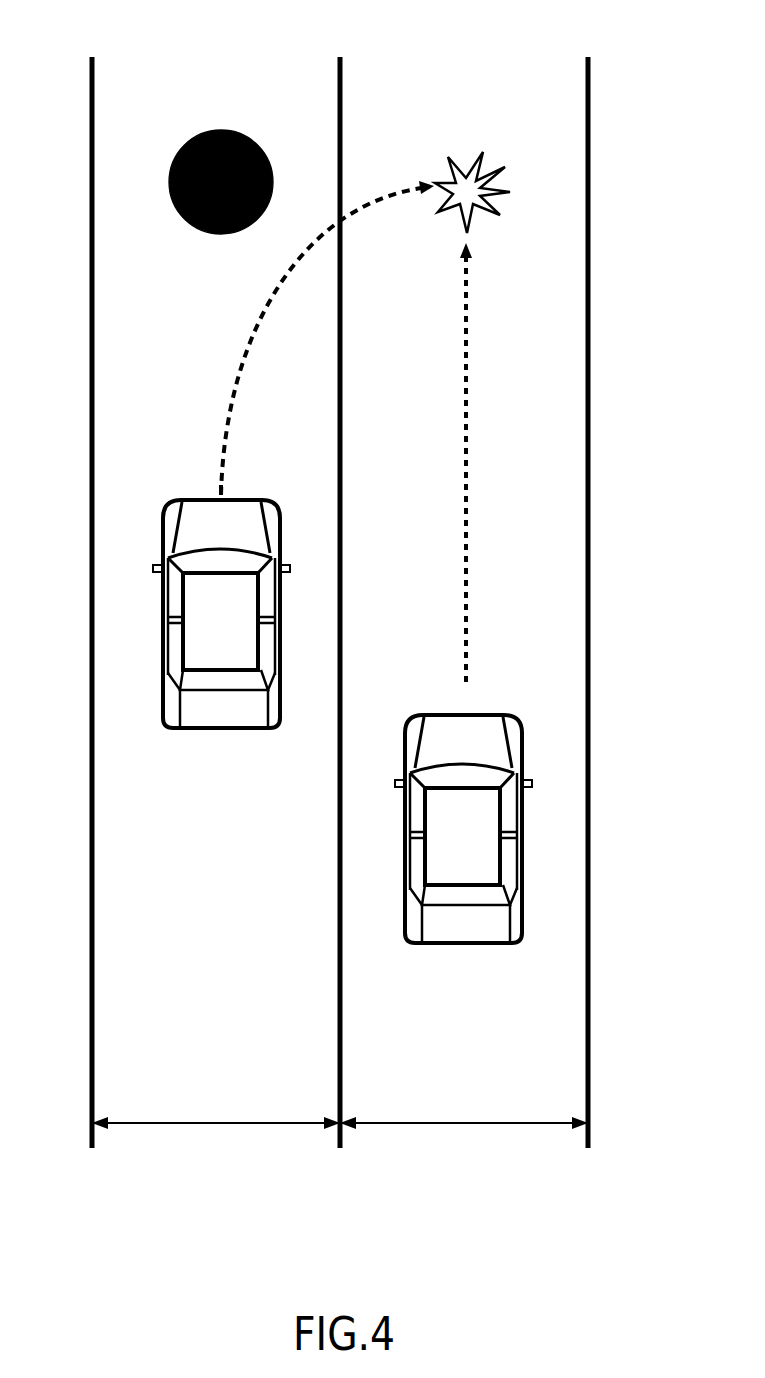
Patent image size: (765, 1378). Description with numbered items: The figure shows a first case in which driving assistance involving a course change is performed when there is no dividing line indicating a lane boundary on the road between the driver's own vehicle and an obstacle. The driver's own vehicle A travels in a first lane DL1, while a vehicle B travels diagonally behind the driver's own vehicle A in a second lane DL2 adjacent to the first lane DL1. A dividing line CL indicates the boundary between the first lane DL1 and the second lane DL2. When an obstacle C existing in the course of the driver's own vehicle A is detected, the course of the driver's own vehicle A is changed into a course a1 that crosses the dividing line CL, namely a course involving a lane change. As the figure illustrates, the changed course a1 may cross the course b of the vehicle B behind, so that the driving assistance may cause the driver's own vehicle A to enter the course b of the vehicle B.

The obstacle C is at (203, 135).
The driver's own vehicle A is at (223, 727).
The vehicle B is at (467, 937).
The course a1 is at (327, 338).
The course b is at (475, 462).
The dividing line CL is at (342, 1017).
The first lane DL1 is at (216, 1143).
The second lane DL2 is at (464, 1143).